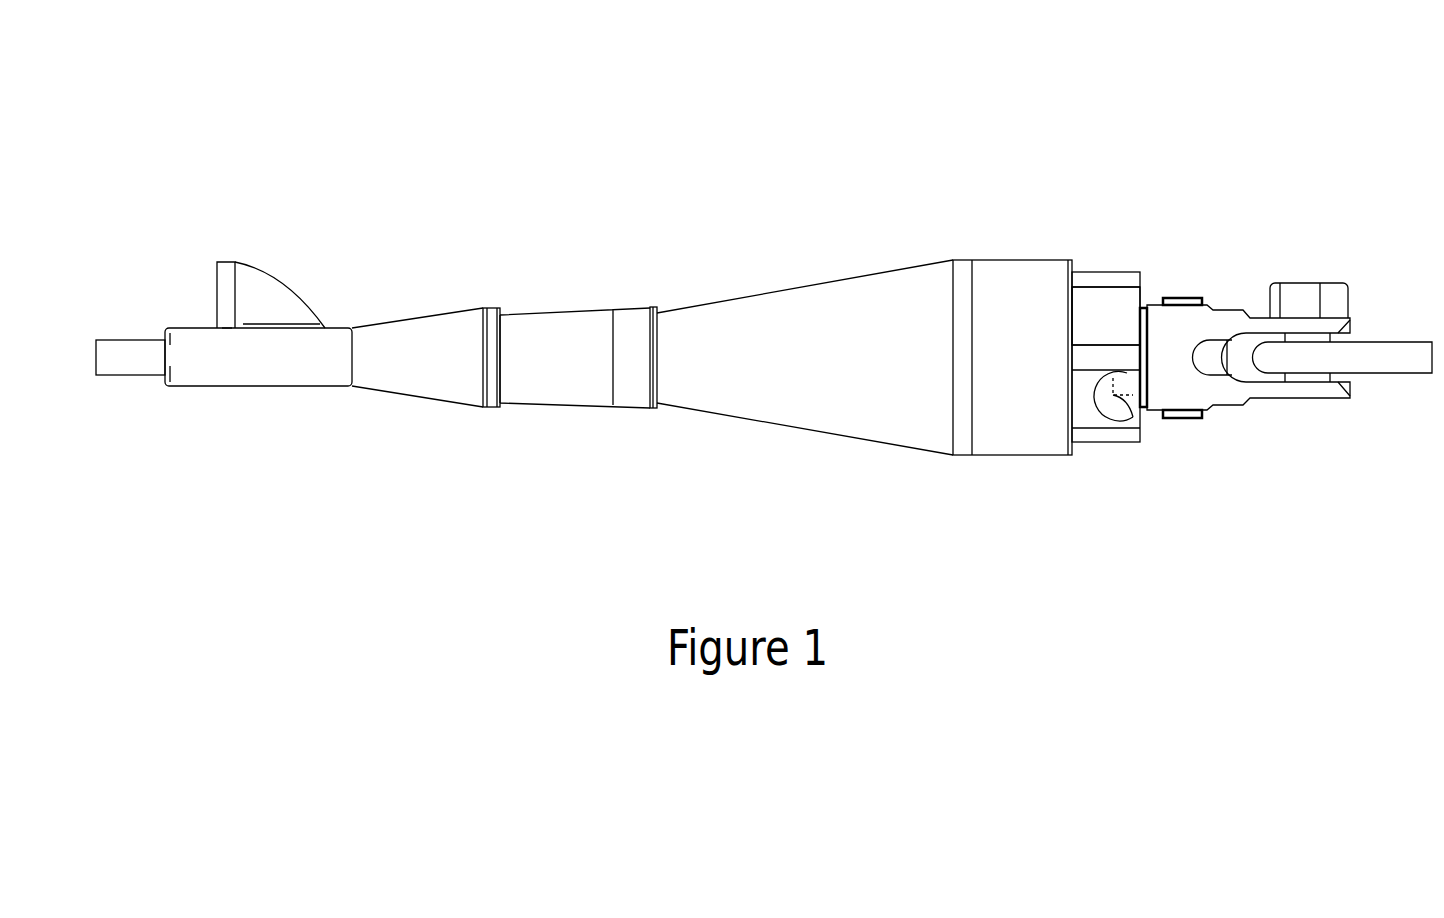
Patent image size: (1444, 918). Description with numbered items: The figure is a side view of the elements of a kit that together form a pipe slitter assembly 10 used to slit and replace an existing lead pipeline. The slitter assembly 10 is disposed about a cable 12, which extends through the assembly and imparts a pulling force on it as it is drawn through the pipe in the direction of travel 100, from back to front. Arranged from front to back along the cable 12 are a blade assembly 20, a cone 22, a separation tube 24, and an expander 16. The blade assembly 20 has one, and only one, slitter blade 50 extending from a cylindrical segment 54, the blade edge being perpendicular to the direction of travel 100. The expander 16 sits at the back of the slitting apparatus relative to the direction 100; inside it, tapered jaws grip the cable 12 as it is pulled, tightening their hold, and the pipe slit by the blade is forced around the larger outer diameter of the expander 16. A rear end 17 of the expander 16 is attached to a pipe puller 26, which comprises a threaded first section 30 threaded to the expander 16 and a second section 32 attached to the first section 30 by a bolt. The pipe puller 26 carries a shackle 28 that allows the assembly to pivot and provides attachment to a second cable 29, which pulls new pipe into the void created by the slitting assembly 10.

The pipe slitter assembly 10 is at (827, 132).
The direction 100 is at (733, 174).
The cable 12 is at (148, 331).
The cylindrical segment 54 is at (258, 387).
The slitter blade 50 is at (271, 272).
The blade assembly 20 is at (405, 337).
The cone 22 is at (508, 330).
The separation tube 24 is at (578, 395).
The expander 16 is at (864, 327).
The rear end 17 is at (1139, 323).
The threaded first section 30 is at (1159, 294).
The second section 32 is at (1121, 446).
The pipe puller 26 is at (1245, 379).
The shackle 28 is at (1348, 270).
The second cable 29 is at (1347, 324).